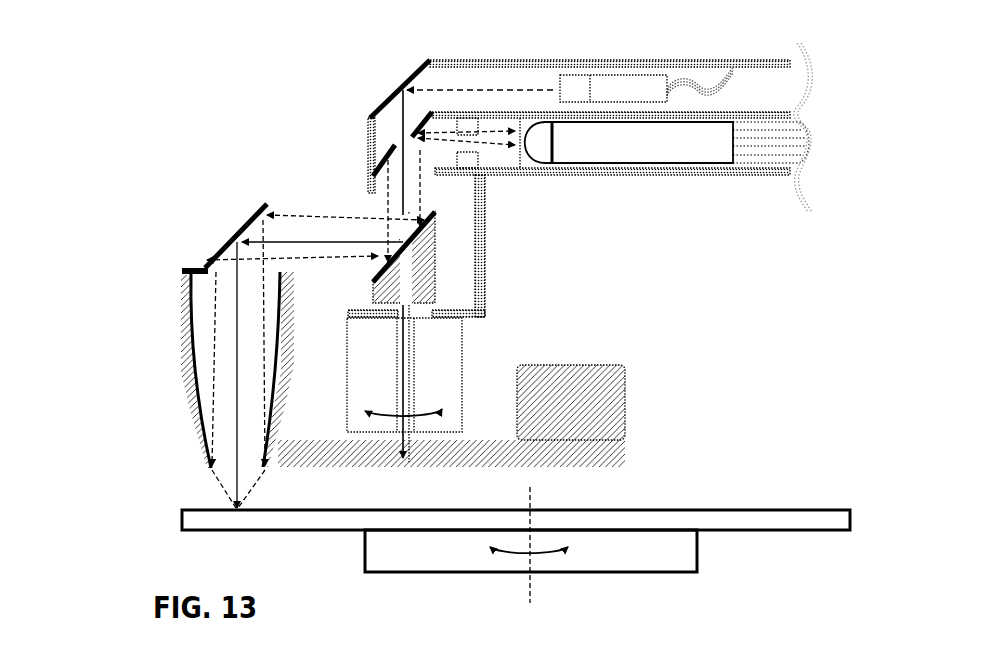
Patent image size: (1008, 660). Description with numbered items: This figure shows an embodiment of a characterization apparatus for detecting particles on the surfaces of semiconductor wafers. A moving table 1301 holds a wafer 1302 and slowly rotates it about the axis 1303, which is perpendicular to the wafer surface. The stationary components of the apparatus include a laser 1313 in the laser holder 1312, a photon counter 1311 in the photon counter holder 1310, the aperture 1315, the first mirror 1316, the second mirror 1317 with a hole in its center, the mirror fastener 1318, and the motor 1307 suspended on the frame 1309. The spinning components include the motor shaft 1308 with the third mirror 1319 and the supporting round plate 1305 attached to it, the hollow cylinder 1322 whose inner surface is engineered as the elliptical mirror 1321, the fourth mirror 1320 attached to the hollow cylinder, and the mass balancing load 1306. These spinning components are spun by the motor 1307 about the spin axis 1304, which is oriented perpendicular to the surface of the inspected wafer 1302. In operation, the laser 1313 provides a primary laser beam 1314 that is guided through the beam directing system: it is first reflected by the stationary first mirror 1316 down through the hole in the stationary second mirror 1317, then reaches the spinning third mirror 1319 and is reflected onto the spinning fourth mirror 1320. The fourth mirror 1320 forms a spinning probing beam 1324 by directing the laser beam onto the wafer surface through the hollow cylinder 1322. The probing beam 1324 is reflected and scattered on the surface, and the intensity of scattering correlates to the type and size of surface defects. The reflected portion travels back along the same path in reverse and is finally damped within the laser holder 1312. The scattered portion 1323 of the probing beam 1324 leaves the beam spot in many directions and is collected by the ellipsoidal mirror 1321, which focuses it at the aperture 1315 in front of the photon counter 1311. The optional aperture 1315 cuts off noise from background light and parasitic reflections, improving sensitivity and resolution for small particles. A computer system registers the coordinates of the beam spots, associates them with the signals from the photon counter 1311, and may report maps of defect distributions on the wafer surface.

The moving table 1301 is at (677, 547).
The wafer 1302 is at (810, 520).
The axis 1303 is at (530, 500).
The spin axis 1304 is at (405, 464).
The supporting round plate 1305 is at (502, 452).
The mass balancing load 1306 is at (597, 400).
The motor 1307 is at (457, 358).
The motor shaft 1308 is at (417, 340).
The frame 1309 is at (485, 277).
The photon counter holder 1310 is at (857, 163).
The photon counter 1311 is at (710, 142).
The laser holder 1312 is at (767, 112).
The laser 1313 is at (612, 90).
The primary laser beam 1314 is at (527, 90).
The aperture 1315 is at (478, 128).
The first mirror 1316 is at (368, 100).
The second mirror 1317 is at (372, 157).
The mirror fastener 1318 is at (370, 184).
The third mirror 1319 is at (373, 276).
The fourth mirror 1320 is at (220, 254).
The elliptical mirror 1321 is at (276, 345).
The hollow cylinder 1322 is at (195, 398).
The portion of the probing beam 1323 is at (218, 476).
The probing beam 1324 is at (232, 490).